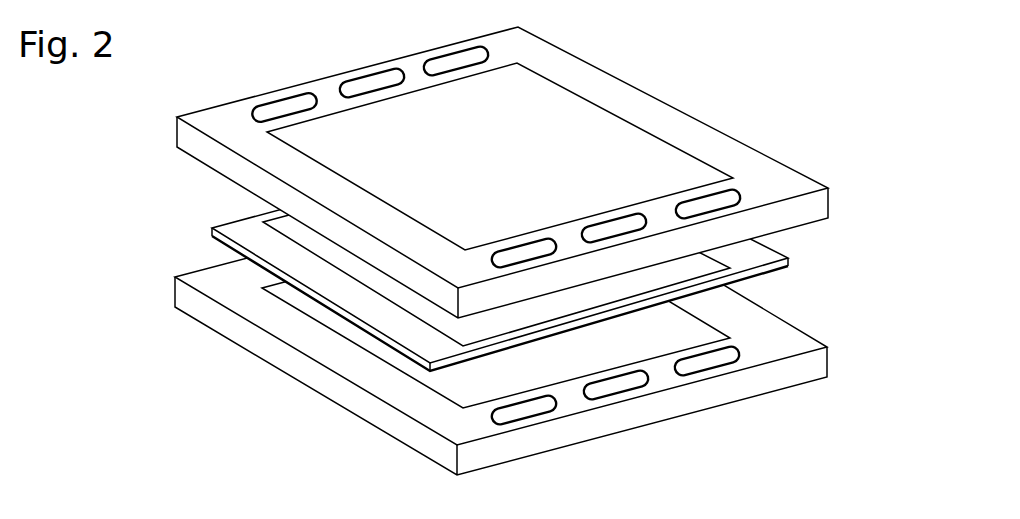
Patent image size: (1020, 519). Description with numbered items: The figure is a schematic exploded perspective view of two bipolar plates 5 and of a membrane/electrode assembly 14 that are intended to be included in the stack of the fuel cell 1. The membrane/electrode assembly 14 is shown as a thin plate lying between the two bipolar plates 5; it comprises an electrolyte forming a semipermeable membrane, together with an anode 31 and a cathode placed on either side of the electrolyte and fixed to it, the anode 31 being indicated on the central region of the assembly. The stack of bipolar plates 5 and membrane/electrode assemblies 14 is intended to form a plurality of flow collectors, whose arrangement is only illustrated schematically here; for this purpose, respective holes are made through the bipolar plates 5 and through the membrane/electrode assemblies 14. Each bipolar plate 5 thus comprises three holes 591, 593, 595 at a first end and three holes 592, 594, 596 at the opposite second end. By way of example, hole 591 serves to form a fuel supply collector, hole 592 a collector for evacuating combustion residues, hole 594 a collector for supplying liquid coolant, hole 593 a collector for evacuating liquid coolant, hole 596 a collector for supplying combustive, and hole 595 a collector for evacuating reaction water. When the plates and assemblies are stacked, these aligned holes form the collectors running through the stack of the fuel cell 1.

The fuel cell 1 is at (753, 65).
The bipolar plate 5 is at (802, 203).
The membrane/electrode assembly 14 is at (790, 265).
The anode 31 is at (340, 257).
The hole 591 is at (453, 48).
The hole 592 is at (521, 241).
The hole 593 is at (368, 73).
The hole 594 is at (613, 215).
The hole 595 is at (282, 97).
The hole 596 is at (742, 193).